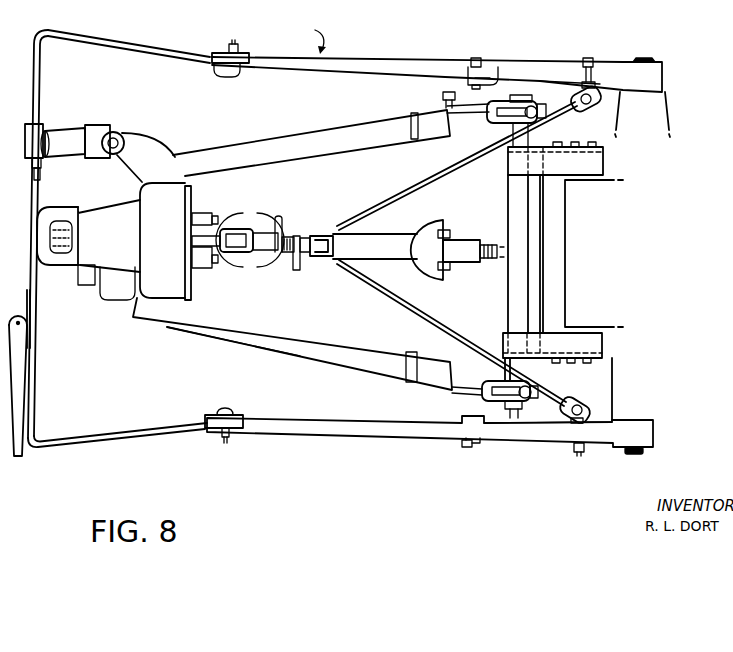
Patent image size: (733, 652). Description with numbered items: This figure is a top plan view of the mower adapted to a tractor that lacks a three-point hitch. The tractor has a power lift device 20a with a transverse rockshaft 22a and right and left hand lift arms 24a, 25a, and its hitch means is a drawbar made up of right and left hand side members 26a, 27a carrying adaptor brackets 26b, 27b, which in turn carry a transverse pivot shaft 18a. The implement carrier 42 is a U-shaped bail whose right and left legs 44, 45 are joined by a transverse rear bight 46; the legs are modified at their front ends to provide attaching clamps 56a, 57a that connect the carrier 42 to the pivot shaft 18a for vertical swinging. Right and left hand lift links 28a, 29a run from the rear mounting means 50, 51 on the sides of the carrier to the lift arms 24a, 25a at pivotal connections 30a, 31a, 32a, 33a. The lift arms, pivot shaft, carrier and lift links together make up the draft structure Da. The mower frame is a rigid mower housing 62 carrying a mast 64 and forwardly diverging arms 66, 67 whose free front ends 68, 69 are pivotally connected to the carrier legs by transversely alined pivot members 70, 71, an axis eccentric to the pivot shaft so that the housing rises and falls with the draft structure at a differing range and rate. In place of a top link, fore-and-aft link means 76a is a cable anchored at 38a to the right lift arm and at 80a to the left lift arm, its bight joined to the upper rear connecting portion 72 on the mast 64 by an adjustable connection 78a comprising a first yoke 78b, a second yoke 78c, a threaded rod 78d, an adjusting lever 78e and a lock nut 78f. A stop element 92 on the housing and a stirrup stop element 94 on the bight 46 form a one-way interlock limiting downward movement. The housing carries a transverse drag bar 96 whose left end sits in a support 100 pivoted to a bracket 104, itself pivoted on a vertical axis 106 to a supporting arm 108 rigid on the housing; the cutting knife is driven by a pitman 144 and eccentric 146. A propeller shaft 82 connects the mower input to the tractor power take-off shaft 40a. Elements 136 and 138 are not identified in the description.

The transverse pivot shaft 18a is at (518, 197).
The power lift device 20a is at (664, 110).
The transverse rockshaft 22a is at (650, 58).
The right hand lift arm 24a is at (508, 437).
The left hand lift arm 25a is at (548, 62).
The right hand drawbar side member 26a is at (610, 352).
The right hand adaptor bracket 26b is at (580, 343).
The left hand drawbar side member 27a is at (607, 152).
The left hand adaptor bracket 27b is at (590, 181).
The right hand lift link 28a is at (355, 434).
The left hand lift link 29a is at (373, 62).
The pivotal connection 30a is at (223, 444).
The pivotal connection 31a is at (233, 43).
The pivotal connection 32a is at (463, 447).
The pivotal connection 33a is at (477, 57).
The cable anchor 38a is at (576, 452).
The tractor power take-off shaft 40a is at (500, 247).
The carrier 42 is at (119, 236).
The right hand carrier leg 44 is at (155, 438).
The left hand carrier leg 45 is at (163, 48).
The transverse rear bight 46 is at (40, 70).
The right hand rear mounting means 50 is at (214, 438).
The left hand rear mounting means 51 is at (217, 52).
The right hand attaching clamp 56a is at (527, 403).
The left hand attaching clamp 57a is at (512, 96).
The mower housing 62 is at (181, 197).
The mast 64 is at (197, 266).
The right hand arm 66 is at (268, 343).
The left hand arm 67 is at (267, 151).
The front end of right arm 68 is at (423, 350).
The front end of left arm 69 is at (420, 140).
The pivot member 70 is at (447, 391).
The pivot member 71 is at (446, 110).
The upper rear connecting portion 72 is at (228, 229).
The fore-and-aft link means 76a is at (400, 193).
The adjustable connection 78a is at (268, 251).
The first yoke 78b is at (272, 215).
The second yoke 78c is at (318, 257).
The threaded rod 78d is at (296, 236).
The adjusting lever 78e is at (298, 272).
The lock nut 78f is at (284, 224).
The cable anchor 80a is at (590, 57).
The propeller shaft 82 is at (393, 243).
The stop element 92 is at (105, 281).
The stop element 94 is at (62, 213).
The drag bar 96 is at (50, 168).
The support 100 is at (57, 137).
The bracket 104 is at (92, 133).
The vertical axis pivot 106 is at (113, 133).
The supporting arm 108 is at (143, 146).
The pivot bar 136 is at (23, 456).
The pivot 138 is at (26, 313).
The pitman 144 is at (87, 281).
The eccentric 146 is at (120, 294).
The draft structure Da is at (308, 38).